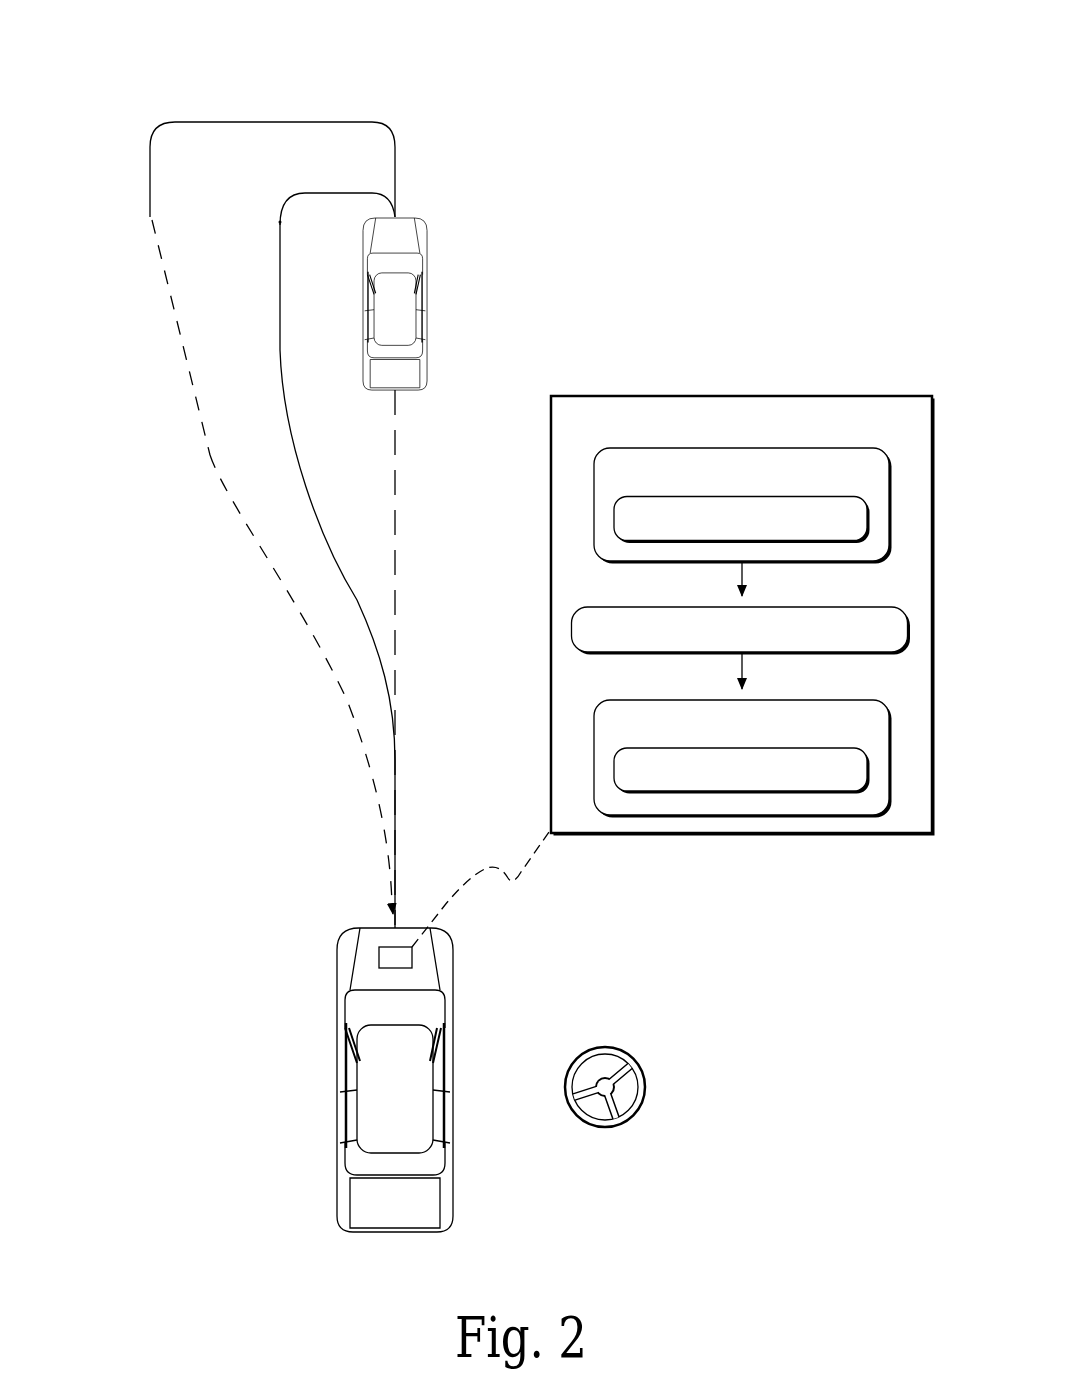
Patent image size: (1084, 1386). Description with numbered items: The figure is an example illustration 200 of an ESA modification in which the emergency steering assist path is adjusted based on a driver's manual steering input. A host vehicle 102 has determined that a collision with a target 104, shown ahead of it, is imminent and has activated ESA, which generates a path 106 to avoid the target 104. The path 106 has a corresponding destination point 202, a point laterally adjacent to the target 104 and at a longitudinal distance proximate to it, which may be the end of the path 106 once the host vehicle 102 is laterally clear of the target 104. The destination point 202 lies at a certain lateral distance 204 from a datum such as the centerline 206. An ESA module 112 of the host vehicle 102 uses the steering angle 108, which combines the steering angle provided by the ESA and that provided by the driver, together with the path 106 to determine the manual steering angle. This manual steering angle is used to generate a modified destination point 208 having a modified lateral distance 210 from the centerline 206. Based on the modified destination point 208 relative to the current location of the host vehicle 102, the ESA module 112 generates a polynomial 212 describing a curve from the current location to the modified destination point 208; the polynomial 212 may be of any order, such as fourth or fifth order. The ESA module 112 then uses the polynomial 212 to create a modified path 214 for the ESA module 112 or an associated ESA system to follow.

The example illustration 200 is at (862, 38).
The host vehicle 102 is at (357, 928).
The target 104 is at (427, 280).
The path 106 is at (283, 372).
The steering angle 108 is at (568, 1090).
The ESA module 112 is at (743, 616).
The destination point 202 is at (280, 222).
The lateral distance 204 is at (338, 193).
The centerline 206 is at (394, 488).
The modified destination point 208 is at (152, 217).
The modified lateral distance 210 is at (272, 122).
The polynomial 212 is at (742, 771).
The modified path 214 is at (208, 460).